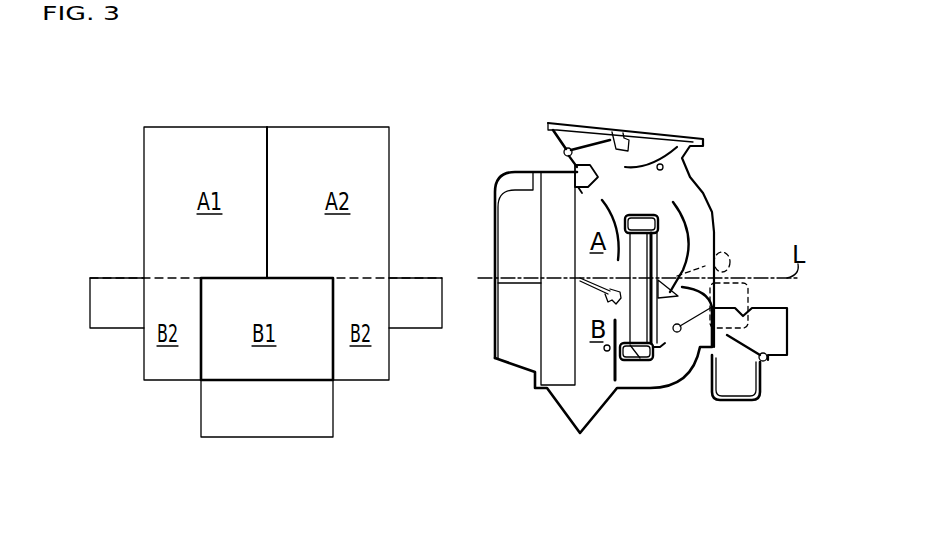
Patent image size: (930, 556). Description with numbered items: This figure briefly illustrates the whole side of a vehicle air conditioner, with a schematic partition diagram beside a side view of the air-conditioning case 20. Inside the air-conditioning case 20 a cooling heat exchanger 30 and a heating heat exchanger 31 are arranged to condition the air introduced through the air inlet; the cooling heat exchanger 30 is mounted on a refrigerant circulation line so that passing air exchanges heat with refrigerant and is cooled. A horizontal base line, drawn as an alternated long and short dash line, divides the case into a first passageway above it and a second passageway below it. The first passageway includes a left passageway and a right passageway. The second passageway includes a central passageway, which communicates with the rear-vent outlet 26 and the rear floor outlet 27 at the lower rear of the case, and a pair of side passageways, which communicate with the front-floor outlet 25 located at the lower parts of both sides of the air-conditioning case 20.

The air-conditioning case 20 is at (721, 208).
The front-floor outlet 25 is at (118, 328).
The rear-vent outlet 26 is at (265, 437).
The rear floor outlet 27 is at (267, 439).
The cooling heat exchanger 30 is at (548, 381).
The heating heat exchanger 31 is at (647, 361).